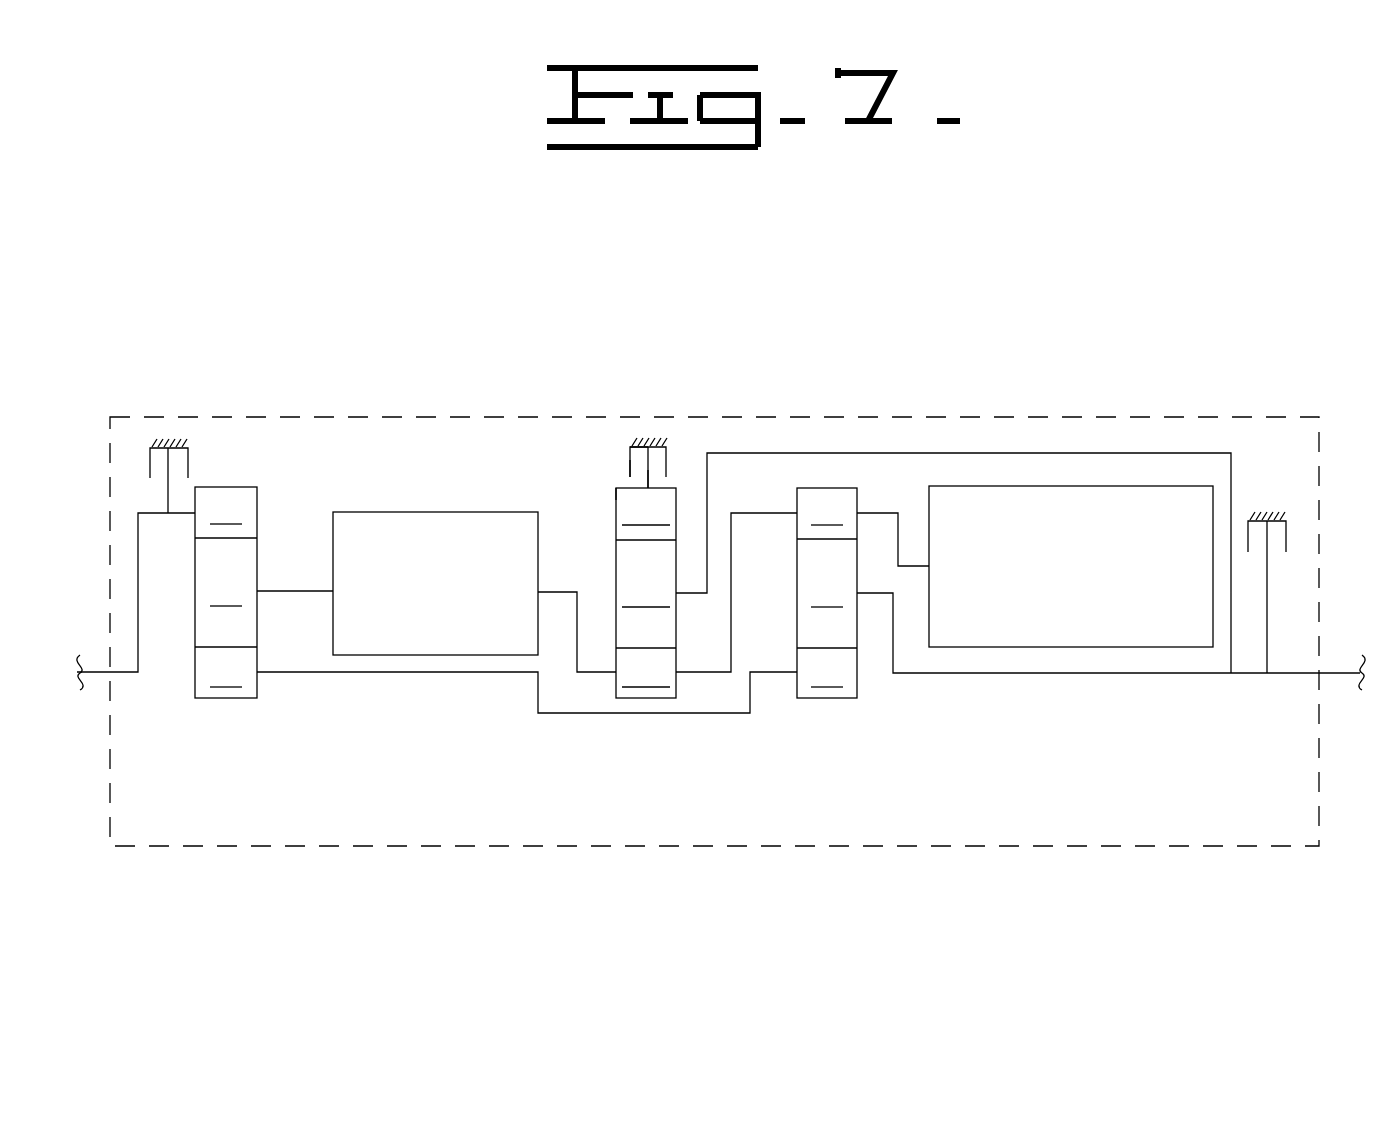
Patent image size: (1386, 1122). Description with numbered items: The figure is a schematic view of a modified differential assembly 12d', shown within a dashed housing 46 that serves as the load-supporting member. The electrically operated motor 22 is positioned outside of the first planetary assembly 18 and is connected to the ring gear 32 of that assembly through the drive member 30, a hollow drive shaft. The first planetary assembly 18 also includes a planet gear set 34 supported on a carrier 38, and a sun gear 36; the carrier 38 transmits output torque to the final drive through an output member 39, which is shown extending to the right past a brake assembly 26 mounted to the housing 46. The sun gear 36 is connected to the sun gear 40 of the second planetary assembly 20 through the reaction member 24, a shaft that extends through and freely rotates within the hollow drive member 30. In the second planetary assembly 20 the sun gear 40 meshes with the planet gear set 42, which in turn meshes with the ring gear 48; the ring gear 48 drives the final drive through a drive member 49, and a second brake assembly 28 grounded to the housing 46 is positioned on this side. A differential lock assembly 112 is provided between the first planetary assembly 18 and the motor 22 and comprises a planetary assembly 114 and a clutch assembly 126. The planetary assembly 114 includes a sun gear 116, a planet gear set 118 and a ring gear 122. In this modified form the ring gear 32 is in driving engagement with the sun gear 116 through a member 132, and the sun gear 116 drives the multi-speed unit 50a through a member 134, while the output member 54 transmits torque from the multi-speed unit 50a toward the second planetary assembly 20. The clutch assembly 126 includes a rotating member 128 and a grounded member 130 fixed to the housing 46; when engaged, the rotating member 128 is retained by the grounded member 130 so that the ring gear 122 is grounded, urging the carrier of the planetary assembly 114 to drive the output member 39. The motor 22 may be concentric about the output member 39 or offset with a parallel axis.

The differential assembly 12d' is at (714, 587).
The brake assembly 28 is at (146, 457).
The differential lock assembly 112 is at (660, 435).
The brake assembly 26 is at (1292, 520).
The drive member 49 is at (137, 590).
The second planetary assembly 20 is at (242, 648).
The ring gear 48 is at (226, 517).
The planet gear set 42 is at (226, 612).
The sun gear 40 is at (226, 673).
The output member 54 is at (320, 590).
The multi-speed unit 50a is at (380, 509).
The member 134 is at (550, 590).
The reaction member 24 is at (435, 672).
The planetary assembly 114 is at (618, 646).
The ring gear 122 is at (646, 518).
The planet gear set 118 is at (646, 613).
The sun gear 116 is at (646, 673).
The housing 46 is at (633, 441).
The grounded member 130 is at (630, 470).
The rotating member 128 is at (650, 483).
The clutch assembly 126 is at (610, 483).
The member 132 is at (776, 512).
The first planetary assembly 18 is at (832, 639).
The ring gear 32 is at (827, 518).
The planet gear set 34 is at (827, 613).
The sun gear 36 is at (827, 704).
The drive member 30 is at (877, 512).
The motor 22 is at (1033, 487).
The carrier 38 is at (858, 596).
The output member 39 is at (1057, 674).